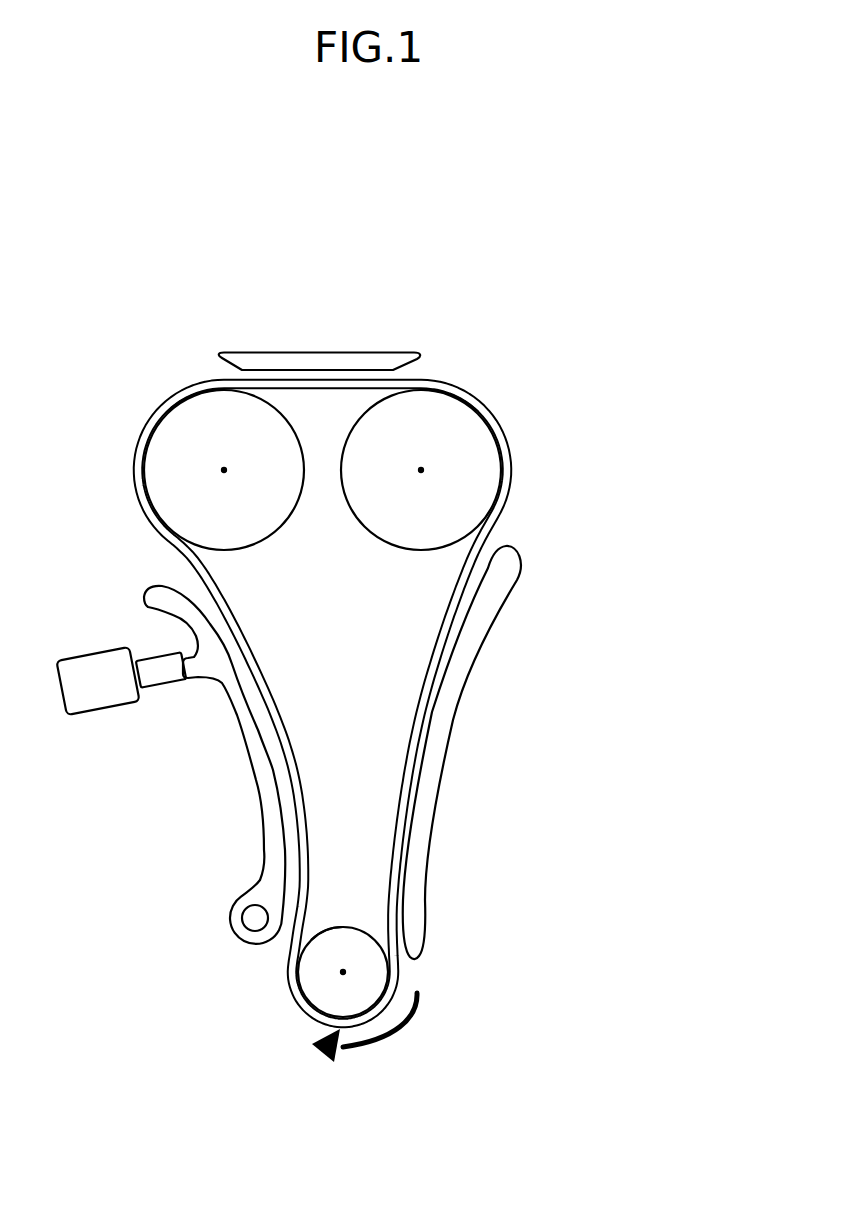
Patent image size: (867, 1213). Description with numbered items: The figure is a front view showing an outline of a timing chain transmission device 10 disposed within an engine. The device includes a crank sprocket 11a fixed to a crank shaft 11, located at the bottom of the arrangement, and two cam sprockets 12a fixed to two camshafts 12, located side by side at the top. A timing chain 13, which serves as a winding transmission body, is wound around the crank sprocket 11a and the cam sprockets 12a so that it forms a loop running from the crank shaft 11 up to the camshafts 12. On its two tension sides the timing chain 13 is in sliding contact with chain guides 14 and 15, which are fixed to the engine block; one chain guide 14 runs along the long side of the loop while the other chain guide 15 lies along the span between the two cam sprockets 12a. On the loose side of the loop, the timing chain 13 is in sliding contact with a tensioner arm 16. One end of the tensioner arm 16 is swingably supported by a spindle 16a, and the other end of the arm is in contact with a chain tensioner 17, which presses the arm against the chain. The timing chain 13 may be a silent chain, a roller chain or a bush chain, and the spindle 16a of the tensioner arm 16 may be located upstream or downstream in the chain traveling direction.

The timing chain transmission device 10 is at (522, 280).
The crank shaft 11 is at (343, 972).
The crank sprocket 11a is at (346, 932).
The camshaft 12 is at (224, 470).
The cam sprocket 12a is at (195, 427).
The timing chain 13 is at (283, 707).
The chain guide 14 is at (453, 712).
The chain guide 15 is at (326, 350).
The tensioner arm 16 is at (237, 716).
The spindle 16a is at (255, 921).
The chain tensioner 17 is at (78, 650).